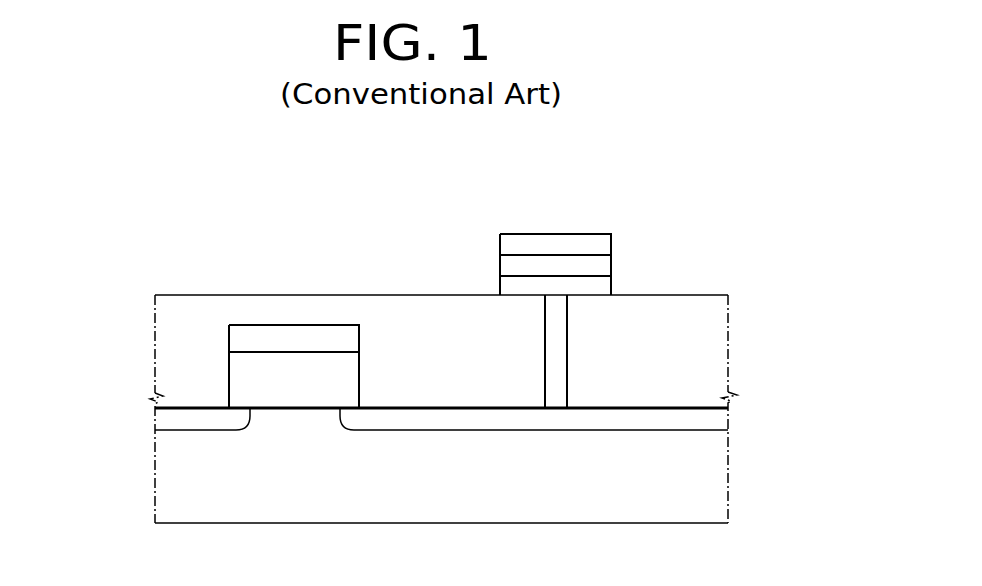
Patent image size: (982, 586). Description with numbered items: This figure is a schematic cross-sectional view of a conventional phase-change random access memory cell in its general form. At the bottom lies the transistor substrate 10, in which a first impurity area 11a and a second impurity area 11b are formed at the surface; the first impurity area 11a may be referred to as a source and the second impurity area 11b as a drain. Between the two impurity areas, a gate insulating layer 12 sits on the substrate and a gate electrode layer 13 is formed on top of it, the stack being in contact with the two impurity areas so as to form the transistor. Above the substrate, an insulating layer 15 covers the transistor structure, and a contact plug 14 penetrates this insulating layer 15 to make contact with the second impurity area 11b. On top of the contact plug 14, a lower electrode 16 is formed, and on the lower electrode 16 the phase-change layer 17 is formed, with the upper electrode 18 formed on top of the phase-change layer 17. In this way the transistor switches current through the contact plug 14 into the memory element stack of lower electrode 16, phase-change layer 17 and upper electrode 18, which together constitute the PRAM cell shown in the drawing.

The transistor substrate 10 is at (165, 475).
The first impurity area 11a is at (165, 420).
The second impurity area 11b is at (717, 420).
The gate insulating layer 12 is at (240, 372).
The gate electrode layer 13 is at (240, 340).
The contact plug 14 is at (558, 327).
The insulating layer 15 is at (715, 365).
The lower electrode 16 is at (612, 285).
The phase-change layer 17 is at (612, 265).
The upper electrode 18 is at (612, 245).